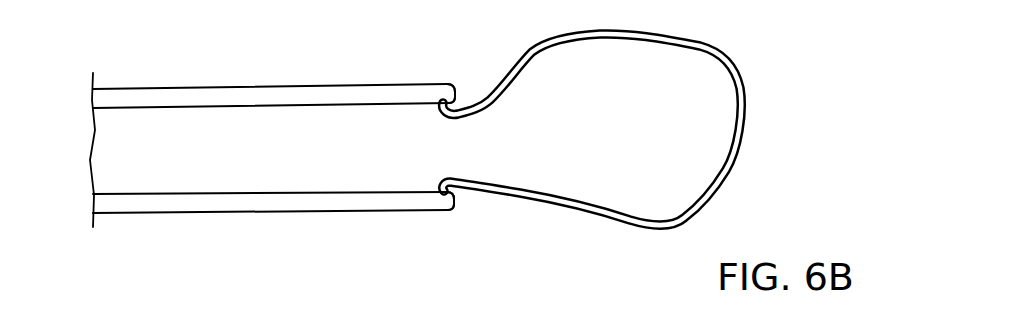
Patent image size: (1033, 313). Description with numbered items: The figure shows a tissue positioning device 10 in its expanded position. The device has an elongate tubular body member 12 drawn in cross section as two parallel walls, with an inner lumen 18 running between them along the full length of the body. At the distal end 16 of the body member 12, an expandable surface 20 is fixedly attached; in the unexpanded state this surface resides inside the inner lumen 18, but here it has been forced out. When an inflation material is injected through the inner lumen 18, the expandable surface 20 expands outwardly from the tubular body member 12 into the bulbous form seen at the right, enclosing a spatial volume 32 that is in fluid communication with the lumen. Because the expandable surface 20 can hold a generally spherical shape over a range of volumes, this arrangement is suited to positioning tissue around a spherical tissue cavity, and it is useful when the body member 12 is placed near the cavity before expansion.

The tissue positioning device 10 is at (173, 68).
The elongate body member 12 is at (285, 95).
The distal end 16 is at (463, 103).
The inner lumen 18 is at (183, 160).
The expandable surface 20 is at (744, 114).
The spatial volume 32 is at (667, 88).